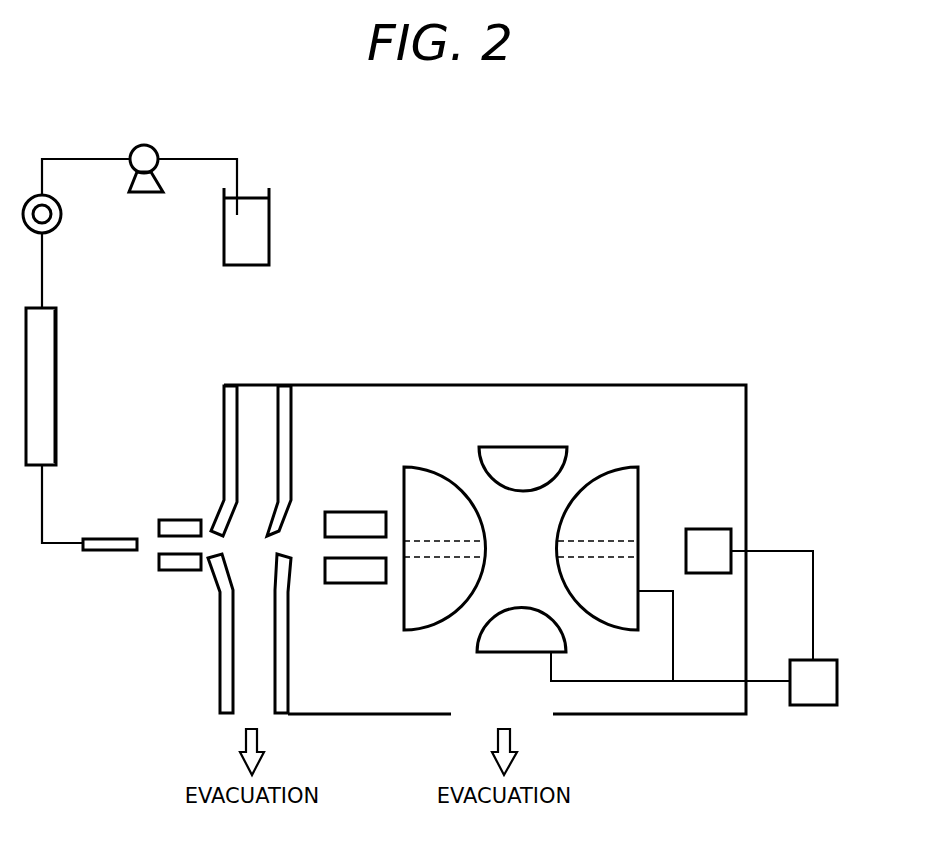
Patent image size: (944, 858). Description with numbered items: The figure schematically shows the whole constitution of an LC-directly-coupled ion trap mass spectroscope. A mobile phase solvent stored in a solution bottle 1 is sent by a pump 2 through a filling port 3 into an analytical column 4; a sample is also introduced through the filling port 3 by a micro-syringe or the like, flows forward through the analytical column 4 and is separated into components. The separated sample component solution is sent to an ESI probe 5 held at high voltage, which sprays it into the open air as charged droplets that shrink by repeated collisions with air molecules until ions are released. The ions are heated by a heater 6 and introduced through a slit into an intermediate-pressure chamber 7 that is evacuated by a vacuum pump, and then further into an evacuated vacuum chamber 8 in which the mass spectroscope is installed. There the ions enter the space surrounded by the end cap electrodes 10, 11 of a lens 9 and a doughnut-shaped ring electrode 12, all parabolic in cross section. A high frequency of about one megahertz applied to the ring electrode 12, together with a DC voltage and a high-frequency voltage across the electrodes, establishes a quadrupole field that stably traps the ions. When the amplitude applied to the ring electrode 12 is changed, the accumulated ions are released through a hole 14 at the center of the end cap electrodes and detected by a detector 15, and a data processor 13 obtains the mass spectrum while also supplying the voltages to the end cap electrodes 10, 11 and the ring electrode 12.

The solution bottle 1 is at (270, 205).
The pump 2 is at (147, 146).
The filling port 3 is at (60, 203).
The analytical column 4 is at (57, 334).
The ESI probe 5 is at (126, 537).
The heater 6 is at (191, 519).
The intermediate-pressure chamber 7 is at (267, 384).
The vacuum chamber 8 is at (515, 385).
The lens 9 is at (366, 510).
The end cap electrode 10 is at (431, 467).
The end cap electrode 11 is at (642, 484).
The ring electrode 12 is at (548, 445).
The data processor 13 is at (824, 659).
The hole 14 is at (641, 545).
The detector 15 is at (713, 528).